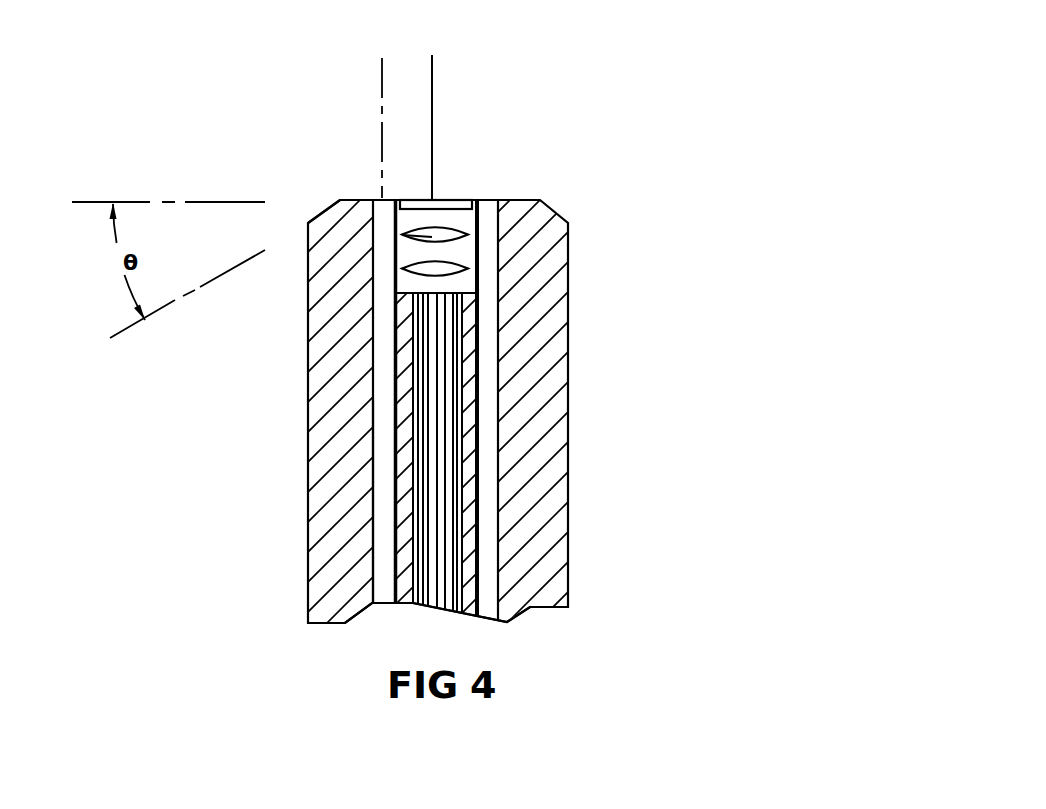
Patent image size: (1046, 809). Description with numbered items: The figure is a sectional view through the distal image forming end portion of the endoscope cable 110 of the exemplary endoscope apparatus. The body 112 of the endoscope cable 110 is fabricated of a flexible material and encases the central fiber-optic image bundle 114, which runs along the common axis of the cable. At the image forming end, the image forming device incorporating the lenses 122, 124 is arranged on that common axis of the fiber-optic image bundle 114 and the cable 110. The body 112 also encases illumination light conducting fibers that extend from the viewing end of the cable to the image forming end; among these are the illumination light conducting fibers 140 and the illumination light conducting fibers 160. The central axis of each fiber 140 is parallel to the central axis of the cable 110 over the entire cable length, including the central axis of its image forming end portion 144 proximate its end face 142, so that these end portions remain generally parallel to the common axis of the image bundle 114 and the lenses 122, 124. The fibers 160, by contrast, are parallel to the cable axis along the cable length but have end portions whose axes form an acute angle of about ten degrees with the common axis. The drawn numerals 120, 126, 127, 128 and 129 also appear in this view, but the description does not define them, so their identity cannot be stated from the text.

The endoscope cable 110 is at (660, 603).
The body 112 is at (533, 433).
The central fiber-optic image bundle 114 is at (413, 607).
The end cap 120 is at (447, 202).
The lens 122 is at (402, 236).
The lens 124 is at (402, 268).
The fiber optic core 126 is at (447, 290).
The top chamfered edge 127 is at (351, 201).
The inner sleeve wall 128 is at (478, 200).
The top face 129 is at (523, 200).
The illumination light conducting fiber 140 is at (487, 377).
The end face 142 is at (384, 199).
The image forming end portion 144 is at (468, 238).
The illumination light conducting fiber 160 is at (390, 545).